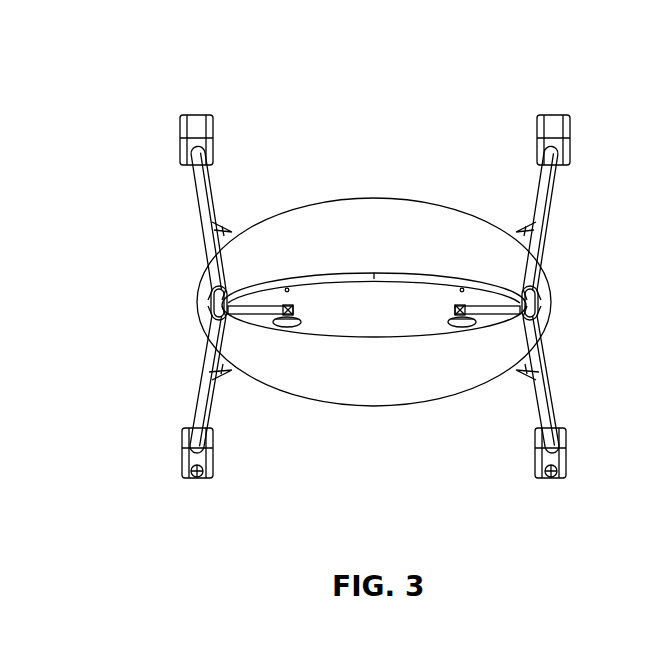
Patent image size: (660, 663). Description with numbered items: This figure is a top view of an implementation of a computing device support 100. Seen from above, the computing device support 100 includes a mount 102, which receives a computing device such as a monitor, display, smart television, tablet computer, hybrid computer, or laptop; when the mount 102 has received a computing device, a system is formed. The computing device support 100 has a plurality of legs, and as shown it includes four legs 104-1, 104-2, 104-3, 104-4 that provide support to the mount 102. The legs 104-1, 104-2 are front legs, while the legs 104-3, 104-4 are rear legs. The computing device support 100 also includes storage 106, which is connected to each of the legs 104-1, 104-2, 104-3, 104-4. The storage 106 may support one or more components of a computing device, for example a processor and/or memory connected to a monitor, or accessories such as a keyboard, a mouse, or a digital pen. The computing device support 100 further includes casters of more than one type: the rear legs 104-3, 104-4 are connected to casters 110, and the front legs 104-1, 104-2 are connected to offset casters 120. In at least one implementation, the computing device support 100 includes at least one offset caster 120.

The computing device support 100 is at (128, 54).
The mount 102 is at (374, 305).
The storage 106 is at (374, 302).
The leg 104-1 is at (198, 397).
The leg 104-2 is at (549, 377).
The leg 104-3 is at (197, 199).
The leg 104-4 is at (556, 199).
The caster 110 is at (236, 127).
The offset caster 120 is at (240, 473).